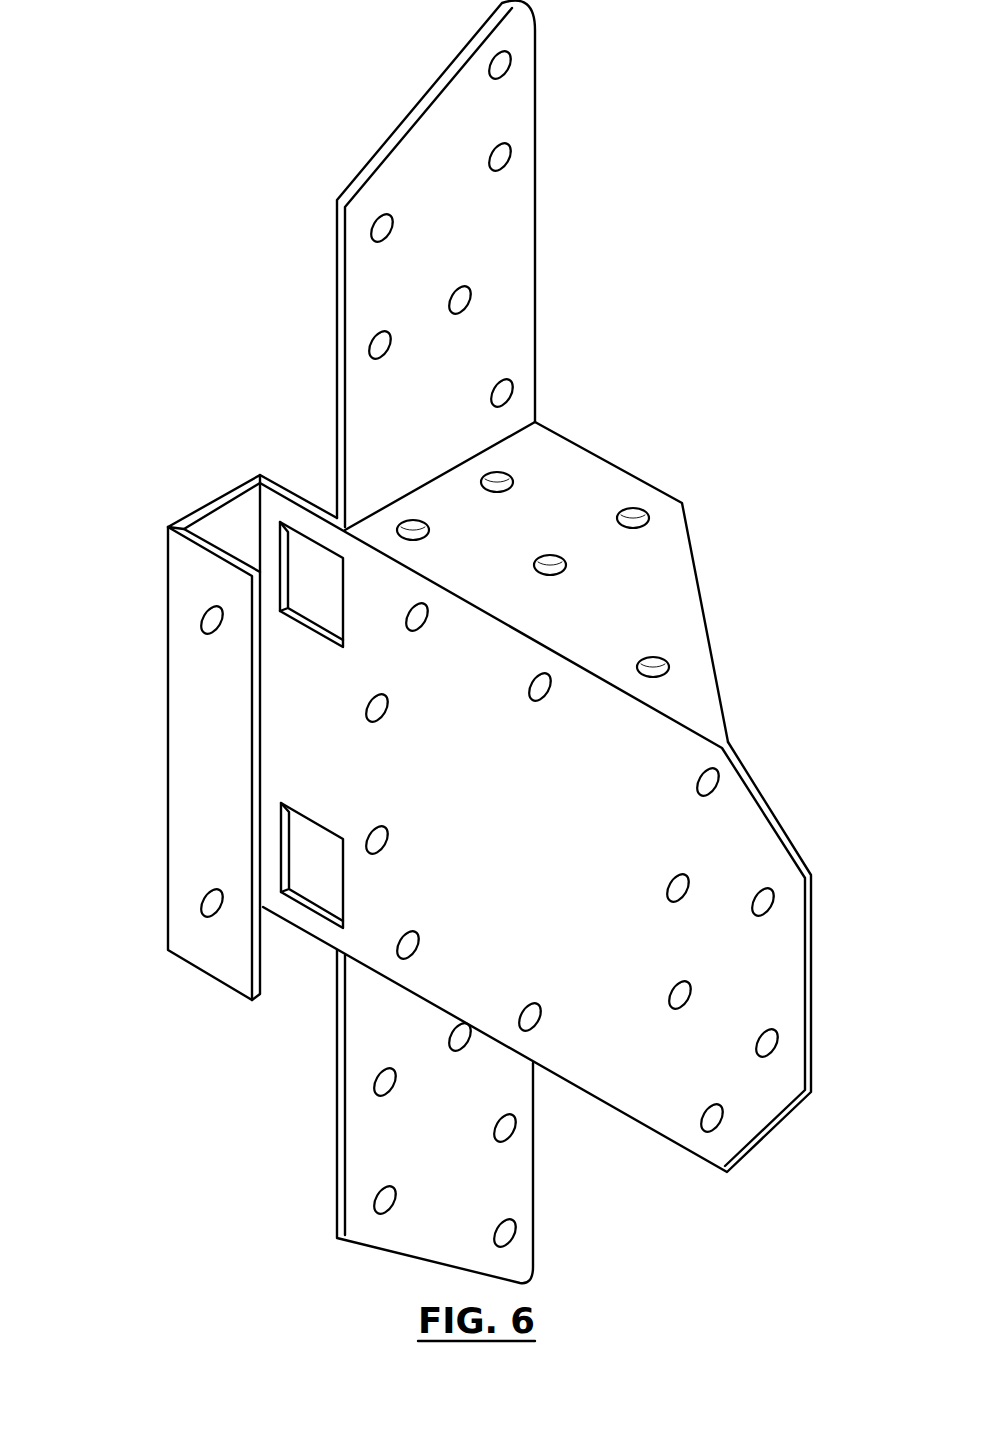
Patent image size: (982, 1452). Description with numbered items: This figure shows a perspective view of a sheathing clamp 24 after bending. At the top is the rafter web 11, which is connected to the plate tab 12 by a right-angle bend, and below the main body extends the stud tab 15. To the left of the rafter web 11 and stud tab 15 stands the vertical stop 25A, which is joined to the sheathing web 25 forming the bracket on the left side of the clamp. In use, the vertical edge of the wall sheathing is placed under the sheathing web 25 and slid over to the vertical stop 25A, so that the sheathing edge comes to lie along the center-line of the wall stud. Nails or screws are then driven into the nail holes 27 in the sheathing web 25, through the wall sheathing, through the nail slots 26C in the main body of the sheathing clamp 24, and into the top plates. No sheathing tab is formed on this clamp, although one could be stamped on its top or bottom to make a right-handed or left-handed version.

The rafter web 11 is at (467, 250).
The plate tab 12 is at (572, 488).
The stud tab 15 is at (488, 1173).
The sheathing clamp 24 is at (709, 862).
The sheathing web 25 is at (170, 741).
The vertical stop 25A is at (222, 522).
The nail slots 26C is at (302, 555).
The nail holes 27 is at (200, 617).